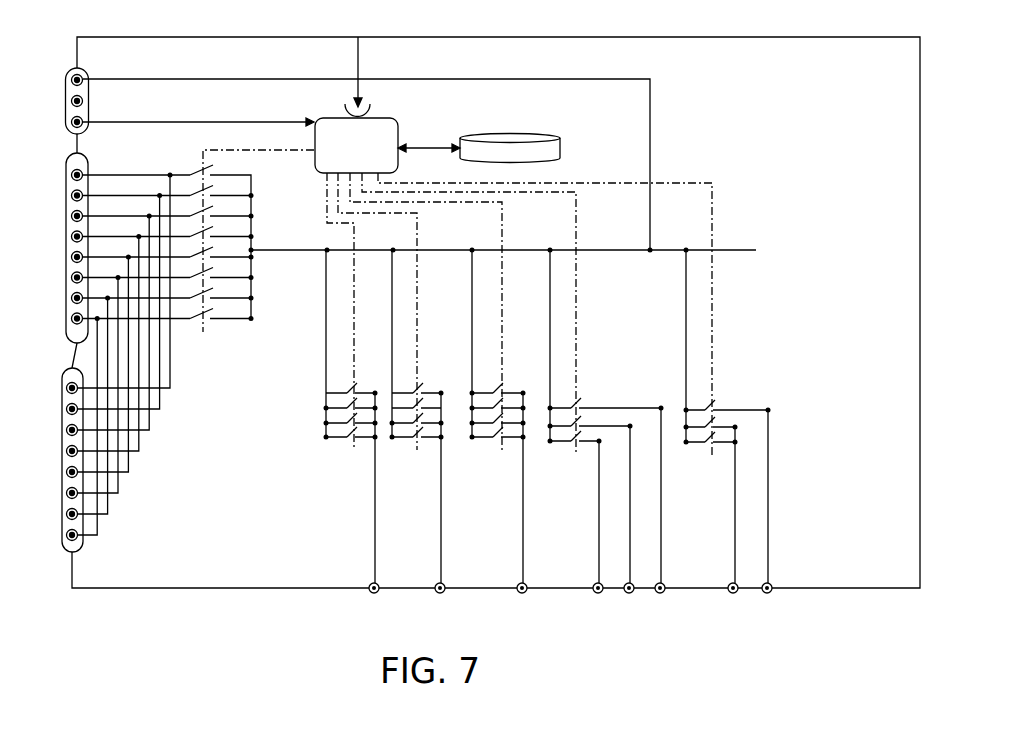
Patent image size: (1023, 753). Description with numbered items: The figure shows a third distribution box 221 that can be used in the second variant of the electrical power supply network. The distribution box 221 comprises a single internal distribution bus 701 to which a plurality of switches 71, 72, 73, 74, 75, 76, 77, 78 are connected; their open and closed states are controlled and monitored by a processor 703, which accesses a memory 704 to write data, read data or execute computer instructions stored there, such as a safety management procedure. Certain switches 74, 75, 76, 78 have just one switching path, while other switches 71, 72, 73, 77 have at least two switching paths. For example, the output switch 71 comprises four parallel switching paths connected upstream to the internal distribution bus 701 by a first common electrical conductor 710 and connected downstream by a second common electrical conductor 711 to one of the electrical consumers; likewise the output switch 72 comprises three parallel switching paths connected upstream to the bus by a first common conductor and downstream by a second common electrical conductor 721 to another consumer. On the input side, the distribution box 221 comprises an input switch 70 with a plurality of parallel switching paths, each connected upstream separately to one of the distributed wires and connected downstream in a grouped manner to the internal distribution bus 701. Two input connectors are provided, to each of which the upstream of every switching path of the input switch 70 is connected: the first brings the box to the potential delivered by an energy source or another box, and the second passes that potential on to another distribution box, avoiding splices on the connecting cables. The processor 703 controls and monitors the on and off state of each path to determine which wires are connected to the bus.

The input switch 70 is at (202, 327).
The output switch 71 is at (352, 446).
The output switch 72 is at (413, 446).
The switch 73 is at (497, 446).
The switch 74 is at (606, 422).
The switch 75 is at (587, 420).
The switch 76 is at (572, 401).
The switch 77 is at (727, 421).
The switch 78 is at (703, 401).
The distribution box 221 is at (920, 358).
The internal distribution bus 701 is at (737, 250).
The processor 703 is at (397, 115).
The memory 704 is at (545, 132).
The first common electrical conductor 710 is at (323, 361).
The second common electrical conductor 711 is at (372, 535).
The second common electrical conductor 721 is at (438, 523).